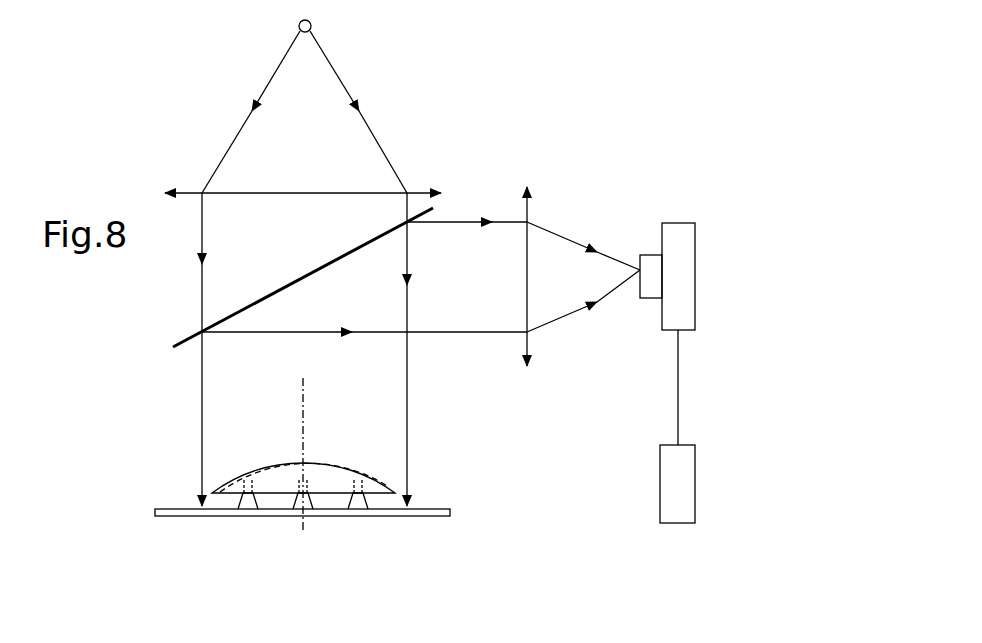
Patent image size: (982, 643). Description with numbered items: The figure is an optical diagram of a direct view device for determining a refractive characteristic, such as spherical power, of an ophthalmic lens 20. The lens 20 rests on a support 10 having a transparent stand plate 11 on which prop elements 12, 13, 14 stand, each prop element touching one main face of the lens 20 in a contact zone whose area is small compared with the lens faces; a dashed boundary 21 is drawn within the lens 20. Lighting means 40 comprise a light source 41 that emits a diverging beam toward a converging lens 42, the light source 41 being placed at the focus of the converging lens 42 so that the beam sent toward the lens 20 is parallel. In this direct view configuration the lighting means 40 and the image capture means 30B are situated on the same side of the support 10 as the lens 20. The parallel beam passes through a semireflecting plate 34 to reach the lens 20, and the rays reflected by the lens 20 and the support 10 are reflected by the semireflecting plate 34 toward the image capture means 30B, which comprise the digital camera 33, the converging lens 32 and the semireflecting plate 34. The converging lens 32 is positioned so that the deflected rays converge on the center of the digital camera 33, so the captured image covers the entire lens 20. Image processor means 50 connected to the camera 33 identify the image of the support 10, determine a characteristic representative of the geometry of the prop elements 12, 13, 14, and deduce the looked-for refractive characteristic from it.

The support 10 is at (152, 513).
The transparent stand plate 11 is at (173, 509).
The prop element 12 is at (358, 478).
The prop element 13 is at (251, 480).
The prop element 14 is at (307, 481).
The ophthalmic lens 20 is at (228, 490).
The lens inner surface 21 is at (389, 477).
The image capture means 30B is at (607, 151).
The converging lens 32 is at (527, 210).
The digital camera 33 is at (670, 230).
The semireflecting plate 34 is at (187, 338).
The lighting means 40 is at (440, 33).
The light source 41 is at (312, 22).
The converging lens 42 is at (428, 193).
The image processor means 50 is at (660, 478).